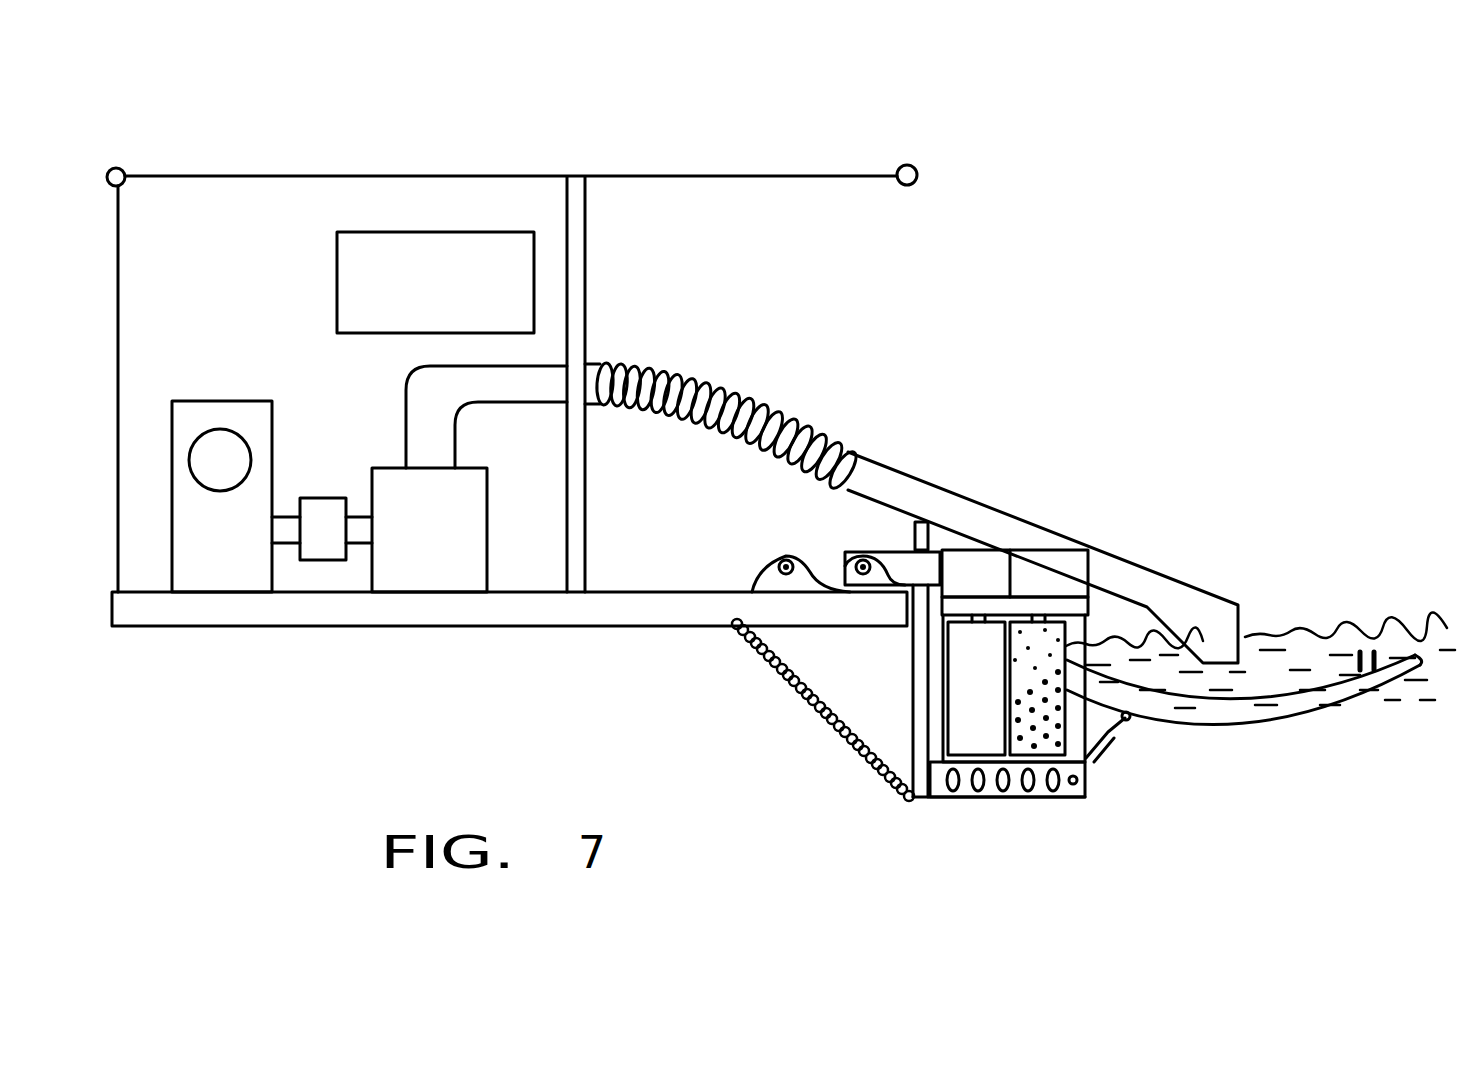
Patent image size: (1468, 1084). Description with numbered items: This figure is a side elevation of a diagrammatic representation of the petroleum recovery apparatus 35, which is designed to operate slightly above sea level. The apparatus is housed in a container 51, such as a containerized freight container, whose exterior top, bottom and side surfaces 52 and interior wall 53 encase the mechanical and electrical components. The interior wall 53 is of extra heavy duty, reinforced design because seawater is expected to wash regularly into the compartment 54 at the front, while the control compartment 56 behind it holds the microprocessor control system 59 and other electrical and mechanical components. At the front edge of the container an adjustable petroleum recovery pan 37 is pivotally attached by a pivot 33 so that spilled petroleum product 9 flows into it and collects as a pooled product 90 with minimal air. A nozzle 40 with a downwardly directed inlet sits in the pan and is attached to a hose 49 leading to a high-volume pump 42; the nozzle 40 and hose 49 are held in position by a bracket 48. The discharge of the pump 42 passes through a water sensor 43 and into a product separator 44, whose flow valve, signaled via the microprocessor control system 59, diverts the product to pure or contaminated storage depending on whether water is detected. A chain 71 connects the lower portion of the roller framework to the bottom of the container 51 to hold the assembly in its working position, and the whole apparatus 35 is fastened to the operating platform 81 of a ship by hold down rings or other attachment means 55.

The petroleum product 9 is at (1302, 635).
The pivot 33 is at (752, 590).
The recovery apparatus 35 is at (740, 173).
The petroleum recovery pan 37 is at (1183, 713).
The nozzle 40 is at (1153, 590).
The high-volume pump 42 is at (452, 563).
The water sensor 43 is at (320, 547).
The product separator 44 is at (216, 567).
The bracket 48 is at (925, 532).
The hose 49 is at (835, 448).
The container 51 is at (549, 187).
The exterior top, bottom and side surfaces 52 is at (120, 328).
The interior wall 53 is at (588, 316).
The compartment 54 is at (852, 291).
The hold down rings or other attachment means 55 is at (125, 180).
The control compartment 56 is at (228, 218).
The microprocessor control system 59 is at (483, 257).
The chain 71 is at (785, 680).
The operating platform 81 is at (900, 627).
The pooled product 90 is at (1253, 690).